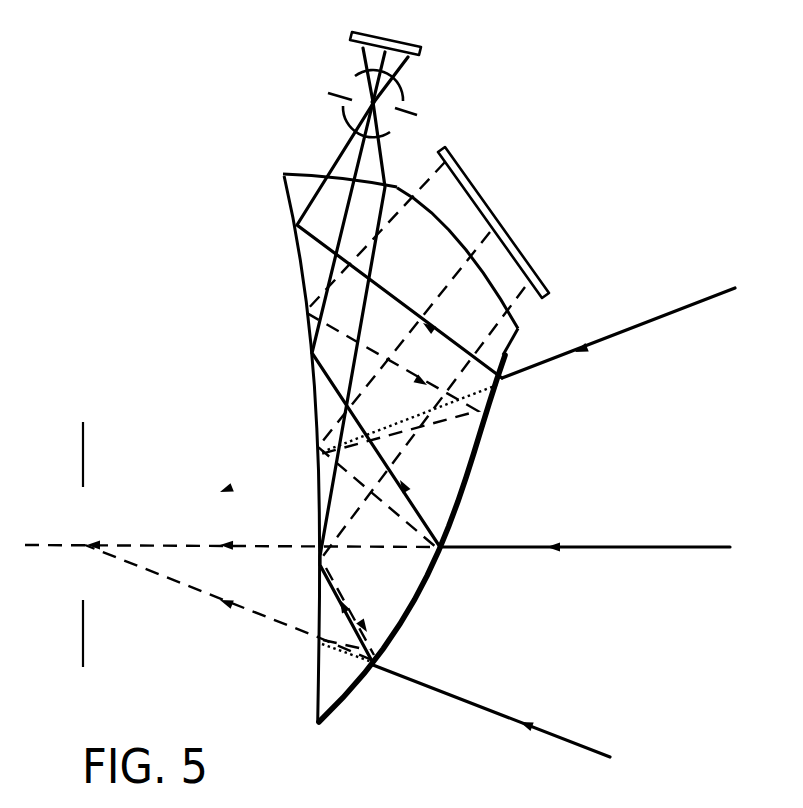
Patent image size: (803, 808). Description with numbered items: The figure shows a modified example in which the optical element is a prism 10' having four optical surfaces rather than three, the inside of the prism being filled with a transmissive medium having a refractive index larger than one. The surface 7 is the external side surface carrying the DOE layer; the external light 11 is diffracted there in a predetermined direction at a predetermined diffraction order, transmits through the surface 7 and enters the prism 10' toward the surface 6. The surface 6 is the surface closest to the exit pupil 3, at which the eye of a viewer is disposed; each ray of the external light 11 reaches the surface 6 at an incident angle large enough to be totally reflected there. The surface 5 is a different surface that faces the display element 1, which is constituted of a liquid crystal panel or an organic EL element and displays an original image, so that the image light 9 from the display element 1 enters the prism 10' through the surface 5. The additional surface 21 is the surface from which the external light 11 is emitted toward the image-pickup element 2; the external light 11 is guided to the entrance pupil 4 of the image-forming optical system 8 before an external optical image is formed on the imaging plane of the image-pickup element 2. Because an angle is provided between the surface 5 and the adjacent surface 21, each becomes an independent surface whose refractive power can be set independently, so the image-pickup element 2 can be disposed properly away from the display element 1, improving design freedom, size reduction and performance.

The display element 1 is at (508, 240).
The image-pickup element 2 is at (397, 38).
The exit pupil 3 is at (85, 441).
The entrance pupil 4 is at (352, 106).
The third surface 5 is at (445, 232).
The second surface 6 is at (306, 394).
The first surface 7 is at (463, 508).
The image-forming optical system 8 is at (390, 125).
The image light 9 is at (275, 545).
The prism 10' is at (401, 614).
The external light 11 is at (592, 545).
The surface 21 is at (290, 175).